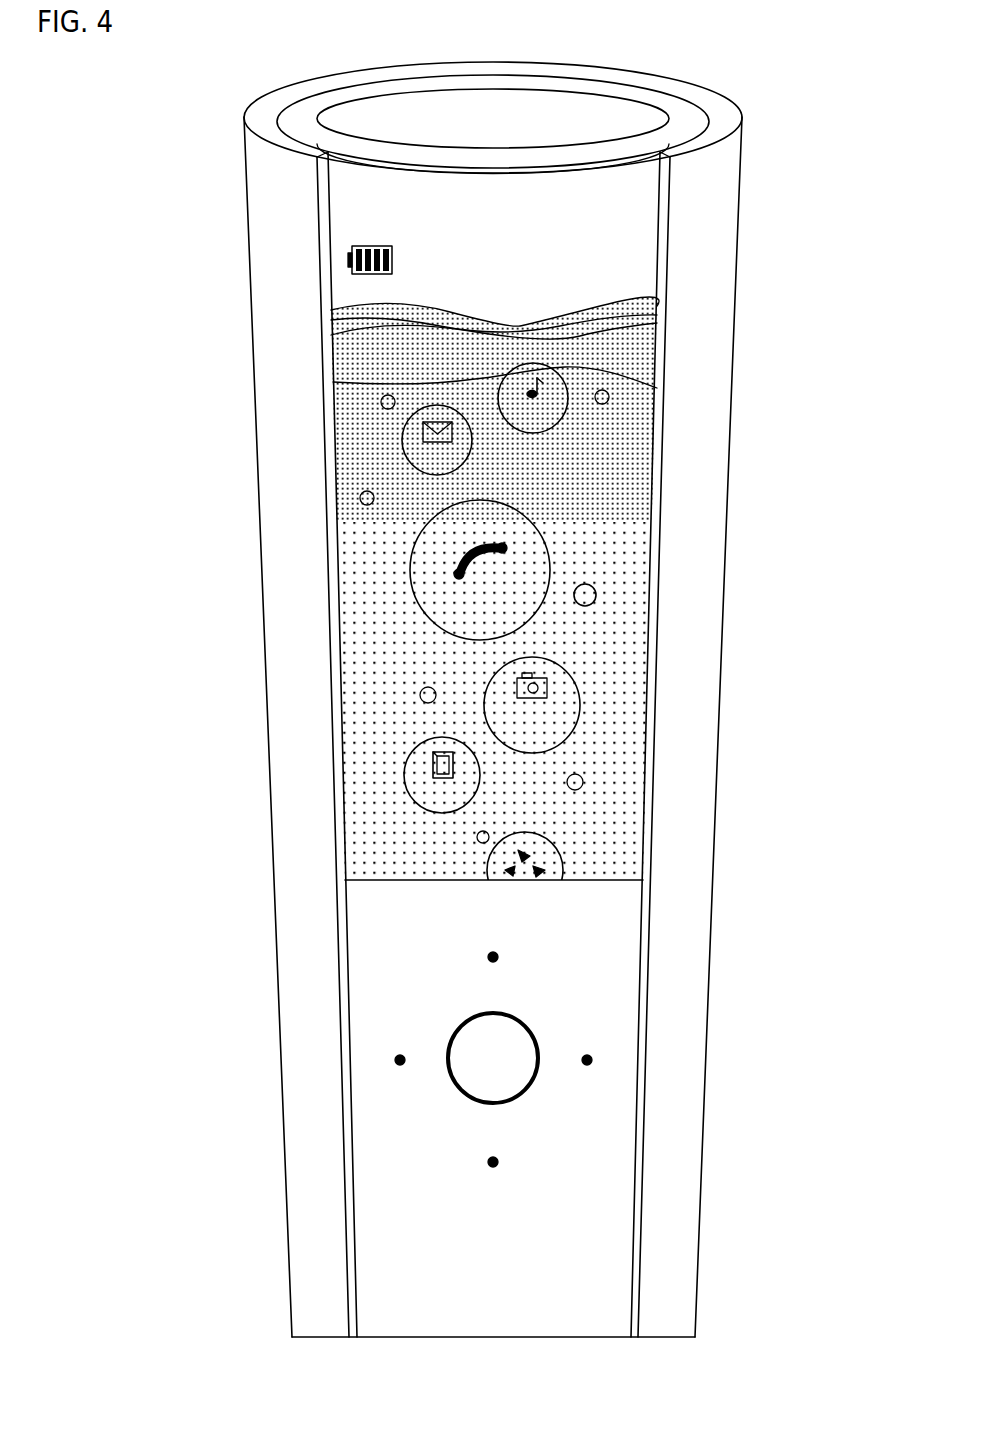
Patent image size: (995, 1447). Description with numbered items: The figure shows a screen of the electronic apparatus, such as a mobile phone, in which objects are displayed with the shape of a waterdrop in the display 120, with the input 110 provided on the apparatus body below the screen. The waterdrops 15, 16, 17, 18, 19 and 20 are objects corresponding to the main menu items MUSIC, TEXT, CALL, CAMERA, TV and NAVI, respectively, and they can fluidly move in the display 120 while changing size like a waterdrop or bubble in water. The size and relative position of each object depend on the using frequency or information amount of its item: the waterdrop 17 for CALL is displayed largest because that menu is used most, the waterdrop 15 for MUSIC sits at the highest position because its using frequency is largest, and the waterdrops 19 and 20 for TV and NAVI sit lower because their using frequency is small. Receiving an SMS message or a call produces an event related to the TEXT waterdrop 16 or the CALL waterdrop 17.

The waterdrop 15 is at (657, 388).
The waterdrop 16 is at (375, 448).
The waterdrop 17 is at (550, 558).
The waterdrop 18 is at (578, 703).
The waterdrop 19 is at (402, 775).
The waterdrop 20 is at (562, 858).
The input 110 is at (348, 1045).
The display 120 is at (317, 262).